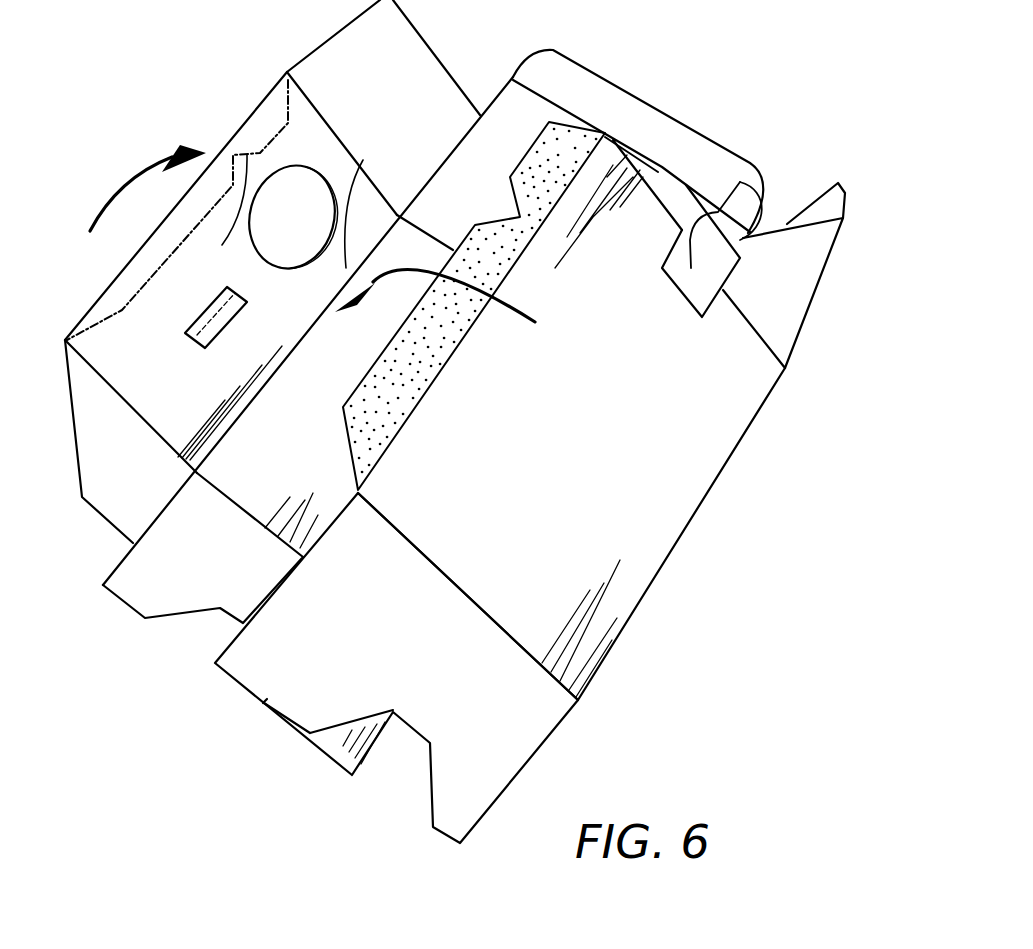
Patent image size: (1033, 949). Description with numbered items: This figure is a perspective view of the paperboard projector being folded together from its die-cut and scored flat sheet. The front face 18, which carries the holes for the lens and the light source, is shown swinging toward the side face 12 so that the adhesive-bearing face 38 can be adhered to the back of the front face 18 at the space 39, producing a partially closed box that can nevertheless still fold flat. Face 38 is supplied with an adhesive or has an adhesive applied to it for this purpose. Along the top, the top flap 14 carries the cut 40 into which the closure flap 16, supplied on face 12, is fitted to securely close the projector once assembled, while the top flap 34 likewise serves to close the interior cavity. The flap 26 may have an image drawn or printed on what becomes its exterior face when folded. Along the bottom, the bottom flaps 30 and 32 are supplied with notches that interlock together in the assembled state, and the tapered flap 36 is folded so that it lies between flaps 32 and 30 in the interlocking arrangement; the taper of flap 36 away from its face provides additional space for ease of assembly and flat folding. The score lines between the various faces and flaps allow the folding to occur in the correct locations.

The face 12 is at (552, 523).
The top flap 14 is at (492, 203).
The closure flap 16 is at (742, 178).
The front face 18 is at (192, 403).
The flap 26 is at (792, 283).
The bottom flap 30 is at (214, 565).
The bottom flap 32 is at (400, 646).
The top flap 34 is at (400, 103).
The flap 36 is at (132, 483).
The face 38 is at (428, 343).
The space 39 is at (263, 126).
The cut 40 is at (632, 153).